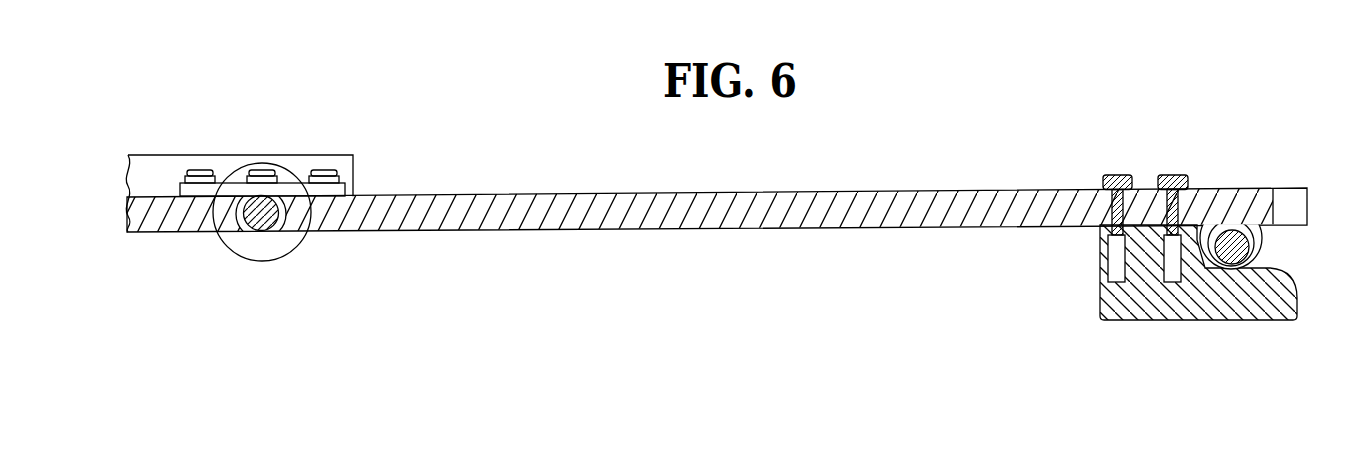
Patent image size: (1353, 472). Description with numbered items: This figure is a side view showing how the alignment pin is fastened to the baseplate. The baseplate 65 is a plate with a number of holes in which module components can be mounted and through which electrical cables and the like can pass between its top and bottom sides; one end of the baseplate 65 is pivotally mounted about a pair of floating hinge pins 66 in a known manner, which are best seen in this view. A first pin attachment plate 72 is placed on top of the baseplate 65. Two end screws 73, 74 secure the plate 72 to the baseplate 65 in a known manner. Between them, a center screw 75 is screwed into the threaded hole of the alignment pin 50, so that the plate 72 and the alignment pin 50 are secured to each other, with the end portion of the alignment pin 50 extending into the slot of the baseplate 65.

The alignment pin 50 is at (257, 231).
The baseplate 65 is at (923, 189).
The floating hinge pins 66 is at (1220, 345).
The first pin attachment plate 72 is at (347, 189).
The end screw 73 is at (199, 170).
The end screw 74 is at (324, 170).
The center screw 75 is at (262, 170).